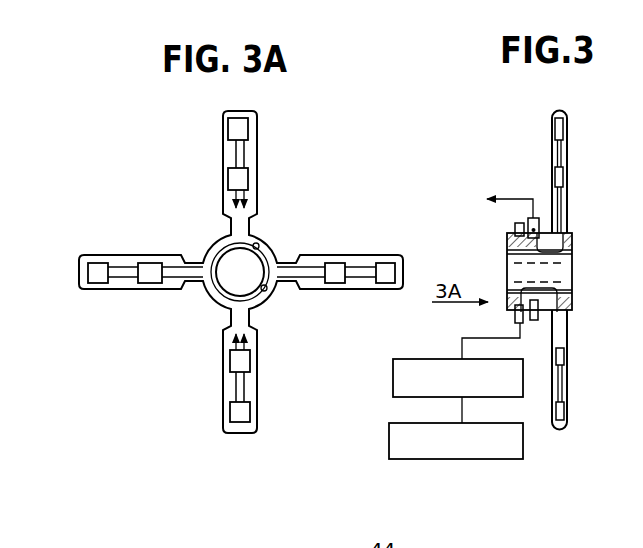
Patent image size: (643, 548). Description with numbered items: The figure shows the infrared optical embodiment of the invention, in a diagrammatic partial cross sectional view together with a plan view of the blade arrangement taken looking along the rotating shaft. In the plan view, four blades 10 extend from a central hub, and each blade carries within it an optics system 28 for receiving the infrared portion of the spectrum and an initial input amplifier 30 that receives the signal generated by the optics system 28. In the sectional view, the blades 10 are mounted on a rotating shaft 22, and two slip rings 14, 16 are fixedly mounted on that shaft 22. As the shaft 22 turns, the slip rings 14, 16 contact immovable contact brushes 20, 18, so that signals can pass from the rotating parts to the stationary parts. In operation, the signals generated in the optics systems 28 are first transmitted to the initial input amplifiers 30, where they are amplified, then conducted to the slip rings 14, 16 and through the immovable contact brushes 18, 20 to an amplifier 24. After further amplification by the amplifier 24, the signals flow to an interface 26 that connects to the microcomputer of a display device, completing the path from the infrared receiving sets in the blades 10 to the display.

In FIG. 3A, the blades 10 is at (259, 134).
In FIG. 3, the blades 10 is at (569, 130).
In FIG. 3, the slip ring 14 is at (515, 228).
In FIG. 3, the slip ring 16 is at (563, 232).
In FIG. 3, the immovable contact brush 18 is at (541, 218).
In FIG. 3, the immovable contact brush 20 is at (521, 325).
In FIG. 3, the rotating shaft 22 is at (570, 272).
In FIG. 3, the amplifier 24 is at (425, 358).
In FIG. 3, the interface 26 is at (440, 460).
In FIG. 3A, the optics systems 28 is at (228, 128).
In FIG. 3, the optics systems 28 is at (554, 131).
In FIG. 3A, the initial input amplifiers 30 is at (248, 178).
In FIG. 3, the initial input amplifiers 30 is at (566, 178).